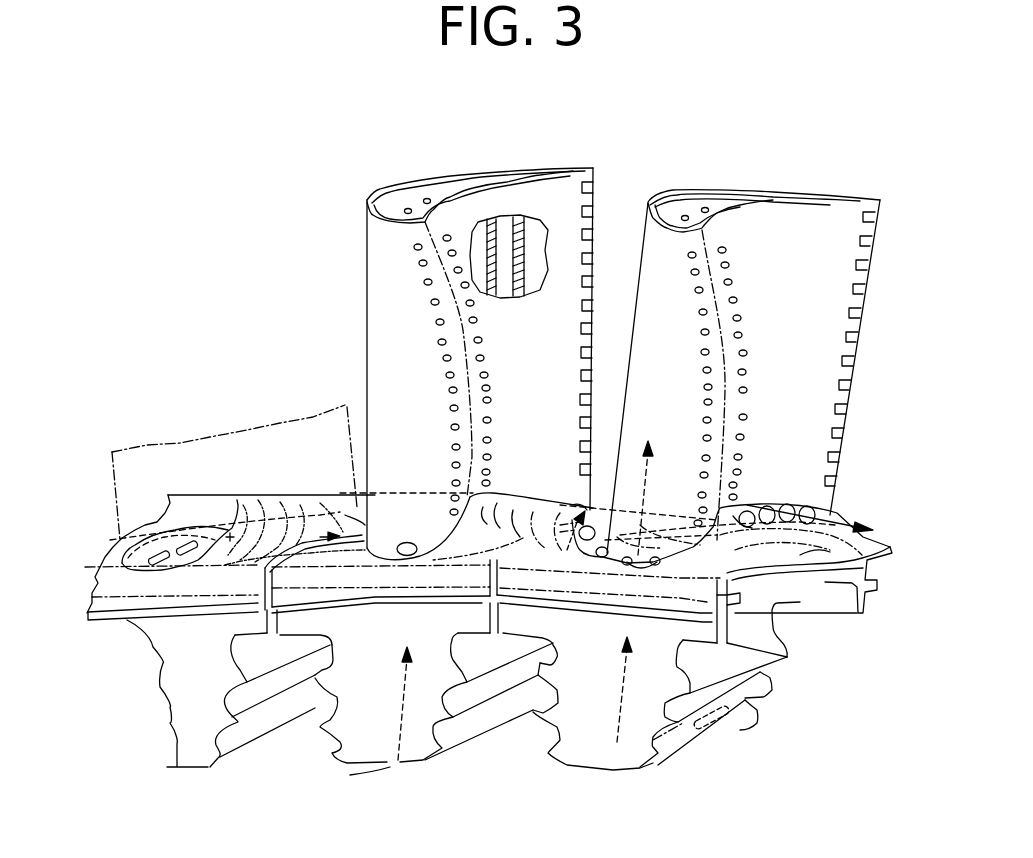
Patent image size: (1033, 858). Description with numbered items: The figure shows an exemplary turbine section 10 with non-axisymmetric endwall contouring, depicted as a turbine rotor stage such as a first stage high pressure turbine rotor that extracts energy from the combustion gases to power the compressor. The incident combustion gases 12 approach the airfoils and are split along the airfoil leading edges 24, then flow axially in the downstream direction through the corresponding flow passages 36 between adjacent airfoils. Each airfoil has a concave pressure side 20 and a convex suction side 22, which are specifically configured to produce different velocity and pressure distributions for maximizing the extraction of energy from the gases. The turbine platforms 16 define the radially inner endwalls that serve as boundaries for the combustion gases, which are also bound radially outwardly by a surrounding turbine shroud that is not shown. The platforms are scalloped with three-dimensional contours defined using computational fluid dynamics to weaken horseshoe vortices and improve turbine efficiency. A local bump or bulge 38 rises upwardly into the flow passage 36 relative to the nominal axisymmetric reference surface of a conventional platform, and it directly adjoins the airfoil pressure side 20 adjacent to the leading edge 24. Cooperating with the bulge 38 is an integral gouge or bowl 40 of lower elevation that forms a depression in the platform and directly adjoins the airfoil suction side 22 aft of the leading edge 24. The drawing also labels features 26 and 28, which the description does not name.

The turbine section 10 is at (312, 243).
The incident combustion gases 12 is at (277, 381).
The turbine platforms 16 is at (97, 568).
The pressure sides 20 is at (542, 390).
The suction sides 22 is at (423, 390).
The airfoil leading edges 24 is at (462, 331).
The trailing edge 26 is at (600, 218).
The internal cooling passages 28 is at (500, 237).
The flow passages 36 is at (580, 404).
The local bulge 38 is at (226, 541).
The integral bowl 40 is at (298, 517).